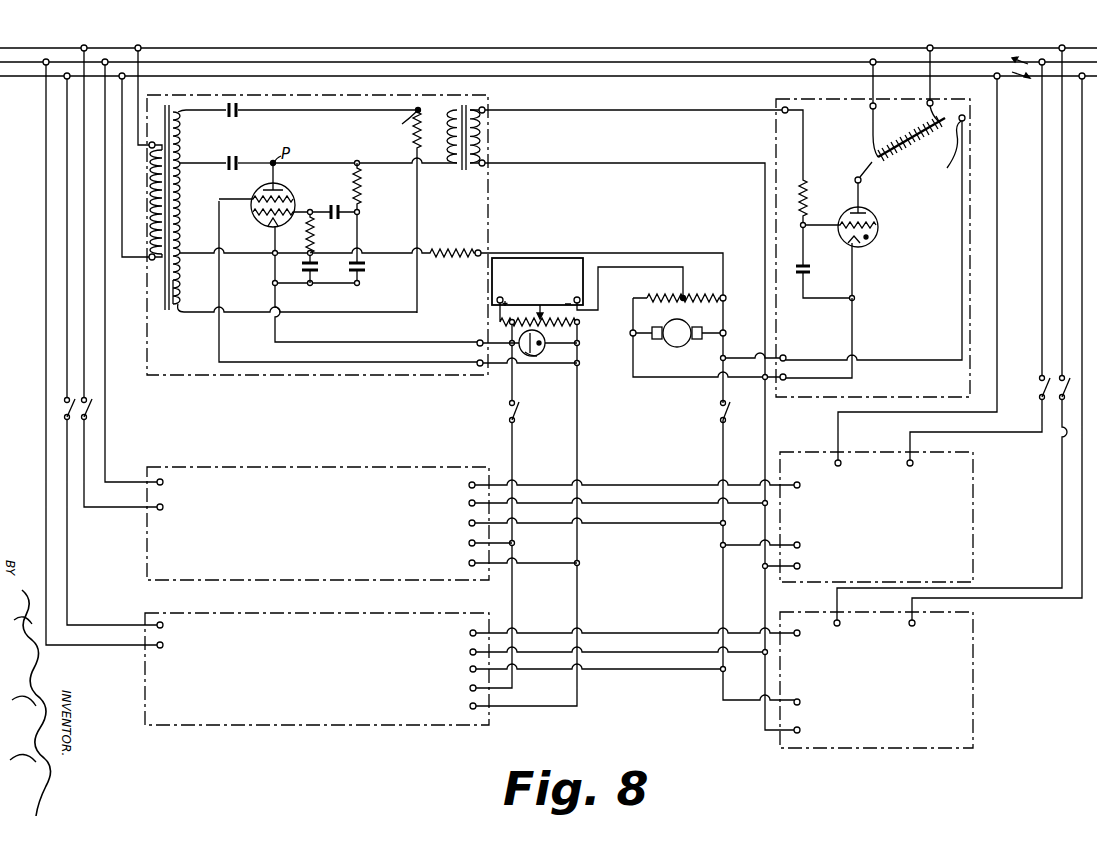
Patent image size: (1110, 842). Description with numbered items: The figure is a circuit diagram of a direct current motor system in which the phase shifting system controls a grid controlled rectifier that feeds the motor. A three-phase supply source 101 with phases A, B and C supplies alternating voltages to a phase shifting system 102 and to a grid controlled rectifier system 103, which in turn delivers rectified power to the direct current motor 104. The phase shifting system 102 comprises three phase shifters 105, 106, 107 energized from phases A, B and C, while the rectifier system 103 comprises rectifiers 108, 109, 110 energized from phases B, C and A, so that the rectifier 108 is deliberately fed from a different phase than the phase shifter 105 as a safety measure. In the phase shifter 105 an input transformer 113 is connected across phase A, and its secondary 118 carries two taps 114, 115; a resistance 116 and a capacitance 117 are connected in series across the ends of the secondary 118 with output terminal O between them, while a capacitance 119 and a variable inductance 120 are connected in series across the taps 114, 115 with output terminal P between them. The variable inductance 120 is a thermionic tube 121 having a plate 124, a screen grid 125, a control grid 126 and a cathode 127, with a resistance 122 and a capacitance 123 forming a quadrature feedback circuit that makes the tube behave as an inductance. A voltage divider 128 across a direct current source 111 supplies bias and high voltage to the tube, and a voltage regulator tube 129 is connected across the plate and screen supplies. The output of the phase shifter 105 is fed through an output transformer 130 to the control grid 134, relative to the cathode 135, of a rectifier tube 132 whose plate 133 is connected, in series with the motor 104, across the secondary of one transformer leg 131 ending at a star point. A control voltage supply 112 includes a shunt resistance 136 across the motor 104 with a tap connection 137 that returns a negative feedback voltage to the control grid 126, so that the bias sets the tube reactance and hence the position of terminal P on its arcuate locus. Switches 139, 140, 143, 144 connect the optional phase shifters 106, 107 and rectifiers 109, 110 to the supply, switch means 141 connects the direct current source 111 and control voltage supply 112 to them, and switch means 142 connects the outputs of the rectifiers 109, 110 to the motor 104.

The three-phase supply source 101 is at (563, 75).
The phase shifting system 102 is at (130, 559).
The grid controlled rectifier system 103 is at (1035, 489).
The direct current motor 104 is at (677, 347).
The phase shifter 105 is at (193, 365).
The phase shifter 106 is at (208, 569).
The phase shifter 107 is at (210, 710).
The rectifier 108 is at (943, 299).
The rectifier 109 is at (960, 504).
The rectifier 110 is at (955, 667).
The direct current source 111 is at (580, 262).
The control voltage supply 112 is at (668, 290).
The input transformer 113 is at (190, 108).
The tap 114 is at (186, 163).
The tap 115 is at (184, 253).
The resistance 116 is at (412, 137).
The capacitance 117 is at (238, 113).
The secondary 118 is at (184, 288).
The capacitance 119 is at (236, 160).
The variable inductance 120 is at (258, 277).
The thermionic tube 121 is at (290, 187).
The resistance 122 is at (361, 181).
The capacitance 123 is at (366, 265).
The plate 124 is at (278, 189).
The screen grid 125 is at (254, 202).
The control grid 126 is at (262, 222).
The cathode 127 is at (271, 229).
The voltage divider 128 is at (543, 334).
The voltage regulator tube 129 is at (538, 356).
The output transformer 130 is at (477, 108).
The transformer leg 131 is at (960, 109).
The rectifier tube 132 is at (879, 227).
The plate 133 is at (537, 312).
The control grid 134 is at (842, 224).
The cathode 135 is at (861, 247).
The shunt resistance 136 is at (702, 339).
The tap connection 137 is at (685, 296).
The switch 139 is at (64, 418).
The switch 140 is at (90, 410).
The switch means 141 is at (520, 410).
The switch means 142 is at (731, 415).
The switch 143 is at (1046, 389).
The switch 144 is at (1064, 434).